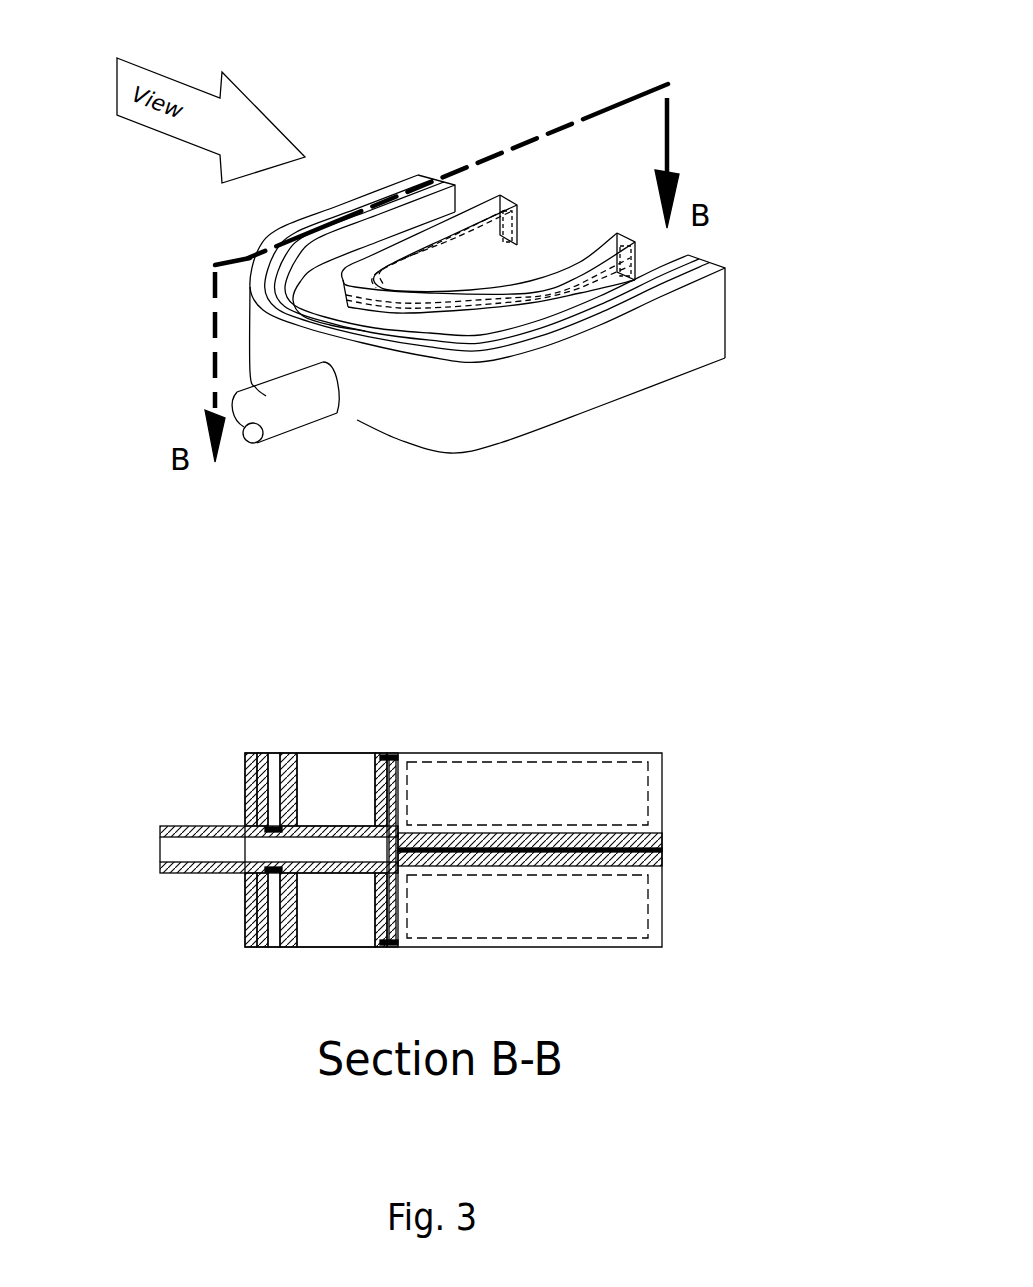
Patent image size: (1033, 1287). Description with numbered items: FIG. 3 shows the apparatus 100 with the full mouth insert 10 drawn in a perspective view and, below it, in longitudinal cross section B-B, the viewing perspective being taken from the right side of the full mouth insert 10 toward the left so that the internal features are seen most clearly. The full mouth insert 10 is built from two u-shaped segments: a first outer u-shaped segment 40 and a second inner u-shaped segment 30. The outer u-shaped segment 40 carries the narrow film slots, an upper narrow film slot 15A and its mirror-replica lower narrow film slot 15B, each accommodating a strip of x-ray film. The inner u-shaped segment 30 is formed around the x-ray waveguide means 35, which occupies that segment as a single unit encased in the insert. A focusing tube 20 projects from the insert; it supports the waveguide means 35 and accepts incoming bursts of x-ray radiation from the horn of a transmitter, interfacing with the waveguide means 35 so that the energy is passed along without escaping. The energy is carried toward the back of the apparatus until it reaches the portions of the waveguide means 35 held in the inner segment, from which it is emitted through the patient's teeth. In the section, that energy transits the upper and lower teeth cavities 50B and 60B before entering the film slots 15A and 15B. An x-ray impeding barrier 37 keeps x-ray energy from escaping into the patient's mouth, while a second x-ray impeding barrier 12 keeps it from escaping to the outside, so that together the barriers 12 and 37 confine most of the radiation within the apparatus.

The apparatus 100 is at (740, 95).
The full mouth insert 10 is at (653, 357).
The x-ray impeding barrier 12 is at (247, 753).
The upper narrow film slot 15A is at (277, 755).
The lower narrow film slot 15B is at (262, 948).
The focusing tube 20 is at (195, 873).
The second inner u-shaped segment 30 is at (483, 292).
The x-ray waveguide means 35 is at (175, 835).
The x-ray impeding barrier 37 is at (385, 760).
The first outer u-shaped segment 40 is at (552, 340).
The upper teeth cavity 50B is at (335, 773).
The lower teeth cavity 60B is at (340, 912).